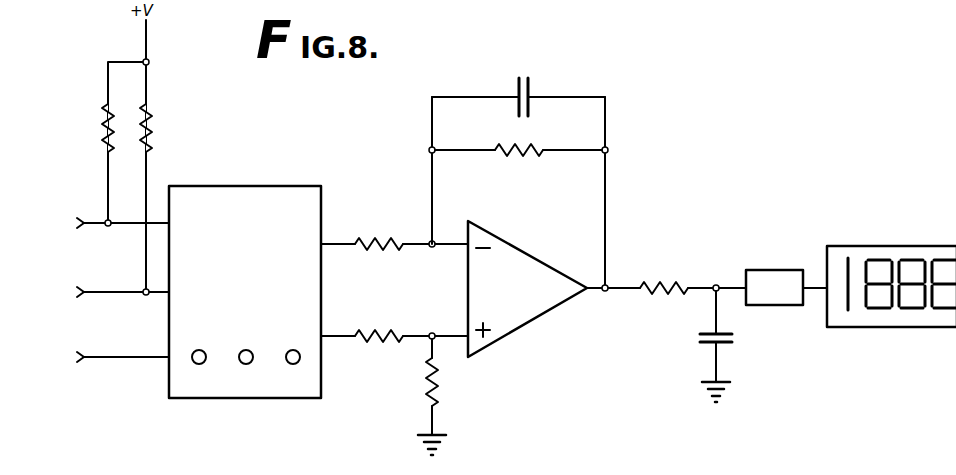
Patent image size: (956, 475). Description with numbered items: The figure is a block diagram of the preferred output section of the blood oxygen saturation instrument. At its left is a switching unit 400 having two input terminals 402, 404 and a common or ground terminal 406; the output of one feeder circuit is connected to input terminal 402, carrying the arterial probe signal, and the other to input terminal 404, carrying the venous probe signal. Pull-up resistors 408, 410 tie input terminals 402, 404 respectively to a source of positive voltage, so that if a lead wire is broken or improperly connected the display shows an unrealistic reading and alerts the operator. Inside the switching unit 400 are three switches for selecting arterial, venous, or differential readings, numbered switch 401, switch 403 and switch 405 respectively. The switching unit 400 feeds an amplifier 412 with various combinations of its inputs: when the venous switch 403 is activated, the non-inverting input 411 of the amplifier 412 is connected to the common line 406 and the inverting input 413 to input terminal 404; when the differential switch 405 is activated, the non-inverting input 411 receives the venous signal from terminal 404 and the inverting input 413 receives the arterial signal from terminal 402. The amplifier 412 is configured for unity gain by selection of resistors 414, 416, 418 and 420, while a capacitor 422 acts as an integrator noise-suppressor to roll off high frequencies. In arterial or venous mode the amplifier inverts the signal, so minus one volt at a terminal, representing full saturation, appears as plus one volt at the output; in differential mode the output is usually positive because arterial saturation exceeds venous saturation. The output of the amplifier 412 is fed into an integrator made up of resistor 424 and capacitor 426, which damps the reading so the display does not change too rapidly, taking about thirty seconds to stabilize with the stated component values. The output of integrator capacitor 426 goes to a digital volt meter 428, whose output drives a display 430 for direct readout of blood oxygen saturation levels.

The switching unit 400 is at (278, 184).
The arterial selection switch 401 is at (200, 364).
The input terminal 402 is at (102, 224).
The venous selection switch 403 is at (247, 364).
The input terminal 404 is at (102, 293).
The differential mode switch 405 is at (294, 364).
The common or ground terminal 406 is at (102, 358).
The pull-up resistor 408 is at (104, 130).
The pull-up resistor 410 is at (149, 124).
The non-inverting input 411 is at (466, 332).
The amplifier 412 is at (536, 318).
The inverting input 413 is at (462, 252).
The resistor 414 is at (375, 239).
The resistor 416 is at (378, 332).
The resistor 418 is at (426, 380).
The resistor 420 is at (524, 158).
The capacitor 422 is at (522, 70).
The resistor 424 is at (667, 283).
The capacitor 426 is at (699, 338).
The digital volt meter 428 is at (772, 268).
The display 430 is at (908, 246).